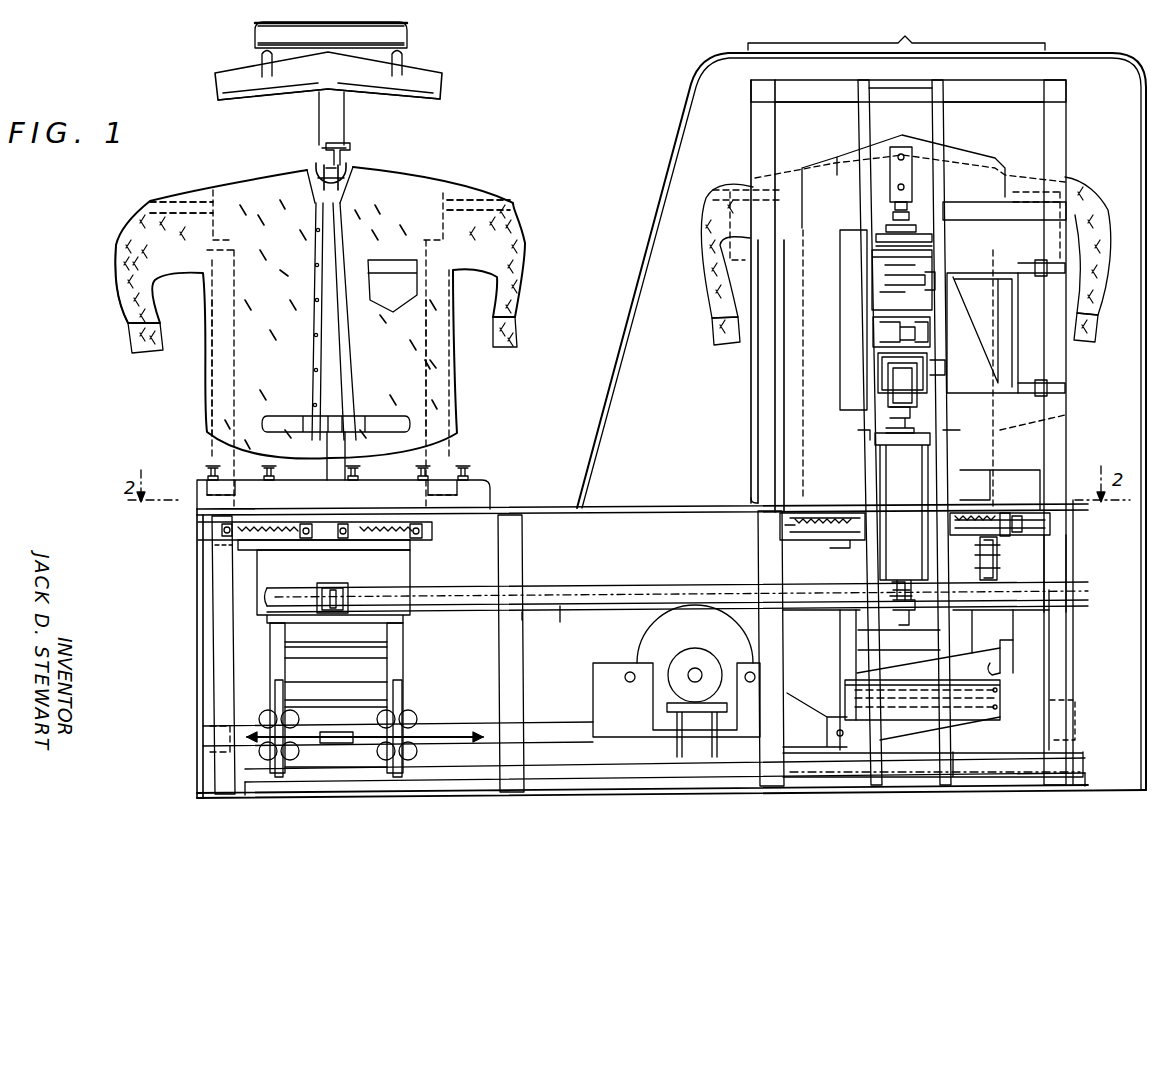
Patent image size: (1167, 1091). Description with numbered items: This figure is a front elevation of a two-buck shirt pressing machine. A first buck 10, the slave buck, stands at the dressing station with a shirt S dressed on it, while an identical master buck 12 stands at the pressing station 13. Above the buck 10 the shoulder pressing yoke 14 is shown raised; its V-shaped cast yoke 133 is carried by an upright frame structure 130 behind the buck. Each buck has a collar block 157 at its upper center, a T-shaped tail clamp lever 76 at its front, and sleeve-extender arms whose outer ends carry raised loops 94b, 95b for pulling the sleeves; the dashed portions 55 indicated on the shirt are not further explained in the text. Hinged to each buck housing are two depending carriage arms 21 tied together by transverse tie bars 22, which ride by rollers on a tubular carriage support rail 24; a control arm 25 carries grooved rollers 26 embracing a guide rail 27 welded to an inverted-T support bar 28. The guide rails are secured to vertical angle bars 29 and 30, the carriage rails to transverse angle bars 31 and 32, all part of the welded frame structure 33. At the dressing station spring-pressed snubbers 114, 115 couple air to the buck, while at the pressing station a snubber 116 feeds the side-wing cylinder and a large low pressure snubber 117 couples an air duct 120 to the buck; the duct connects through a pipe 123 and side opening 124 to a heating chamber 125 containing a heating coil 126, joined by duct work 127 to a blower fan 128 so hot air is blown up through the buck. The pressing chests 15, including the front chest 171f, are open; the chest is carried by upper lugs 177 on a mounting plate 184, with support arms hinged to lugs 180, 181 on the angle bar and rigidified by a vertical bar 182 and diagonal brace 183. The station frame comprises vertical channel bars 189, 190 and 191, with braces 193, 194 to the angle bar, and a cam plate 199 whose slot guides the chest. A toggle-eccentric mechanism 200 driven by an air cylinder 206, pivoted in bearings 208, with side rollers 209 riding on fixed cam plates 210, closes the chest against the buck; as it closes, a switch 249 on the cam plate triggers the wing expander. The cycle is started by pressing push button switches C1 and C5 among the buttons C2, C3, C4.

The first buck 10 is at (450, 392).
The second buck 12 is at (1065, 415).
The pressing station 13 is at (896, 27).
The shoulder pressing yoke 14 is at (432, 52).
The pressing chests 15 is at (747, 362).
The carriage arms 21 is at (284, 640).
The transverse tie bars 22 is at (358, 656).
The carriage support rail 24 is at (490, 724).
The control arm 25 is at (348, 586).
The grooved rollers 26 is at (333, 590).
The guide rail 27 is at (612, 590).
The support bar 28 is at (558, 615).
The vertical angle bars 29 is at (1064, 562).
The vertical angle bars 30 is at (205, 693).
The transverse angle bars 31 is at (1075, 704).
The transverse angle bars 32 is at (208, 737).
The welded frame structure 33 is at (197, 769).
The side seams 55 is at (212, 358).
The tail clamp lever 76 is at (388, 410).
The raised loop 94b is at (158, 200).
The raised loop 95b is at (497, 192).
The spring-pressed snubber 114 is at (220, 545).
The spring-pressed snubber 115 is at (205, 522).
The spring-pressed snubber 116 is at (1048, 528).
The low pressure air snubber 117 is at (1000, 560).
The air duct 120 is at (1045, 546).
The downwardly extending pipe 123 is at (1045, 658).
The side opening 124 is at (990, 665).
The heating chamber 125 is at (897, 726).
The heating coil 126 is at (985, 725).
The duct work 127 is at (828, 722).
The blower fan 128 is at (672, 648).
The upright frame structure 130 is at (350, 118).
The yoke 133 is at (268, 98).
The collar block 157 is at (348, 160).
The front pressing chest 171f is at (750, 398).
The upper pair of lugs 177 is at (880, 285).
The lug 180 is at (1062, 393).
The lug 181 is at (1070, 270).
The vertical bar 182 is at (1010, 302).
The diagonal brace 183 is at (985, 385).
The mounting plate 184 is at (848, 248).
The vertical channel bar 189 is at (857, 112).
The vertical channel bar 190 is at (940, 116).
The vertical channel bar 191 is at (915, 232).
The upper brace 193 is at (982, 222).
The lower brace 194 is at (1015, 460).
The cam plate 199 is at (877, 236).
The toggle-eccentric mechanism 200 is at (870, 360).
The air cylinder 206 is at (880, 482).
The bearings 208 is at (905, 608).
The side rollers 209 is at (872, 388).
The fixed cam plates 210 is at (872, 338).
The switch 249 is at (888, 224).
The common push button switch C1 is at (208, 465).
The clamp 2 C2 is at (276, 466).
The clamp 3 C3 is at (362, 466).
The clamp 4 C4 is at (430, 466).
The travel push button switch C5 is at (472, 465).
The shirt S is at (116, 283).